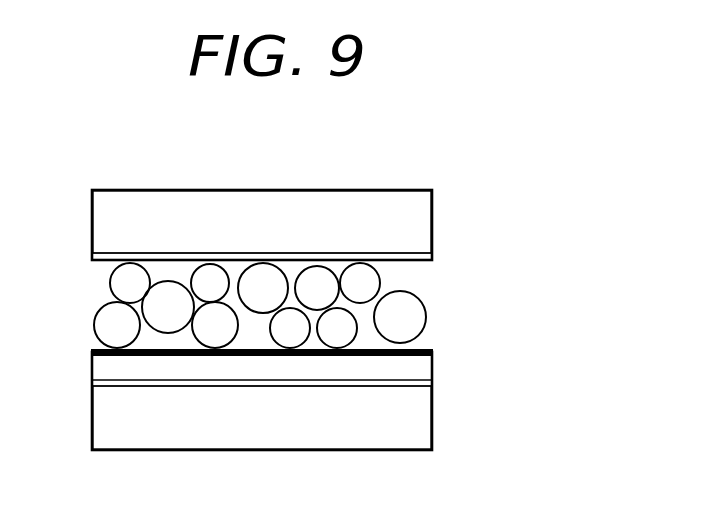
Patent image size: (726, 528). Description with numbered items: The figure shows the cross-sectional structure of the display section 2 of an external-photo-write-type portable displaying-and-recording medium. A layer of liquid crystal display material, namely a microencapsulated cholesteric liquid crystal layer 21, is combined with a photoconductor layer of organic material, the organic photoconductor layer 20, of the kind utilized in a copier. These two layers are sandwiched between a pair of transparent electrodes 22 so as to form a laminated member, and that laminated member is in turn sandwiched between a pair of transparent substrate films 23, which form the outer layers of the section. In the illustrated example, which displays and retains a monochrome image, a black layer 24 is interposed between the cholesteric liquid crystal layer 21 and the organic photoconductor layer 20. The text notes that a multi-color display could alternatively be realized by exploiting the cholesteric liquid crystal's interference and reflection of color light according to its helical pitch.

The display section 2 is at (357, 190).
The organic photoconductor layer 20 is at (380, 367).
The cholesteric liquid crystal layer 21 is at (258, 292).
The transparent electrodes 22 is at (380, 253).
The transparent substrate films 23 is at (390, 213).
The black layer 24 is at (425, 344).